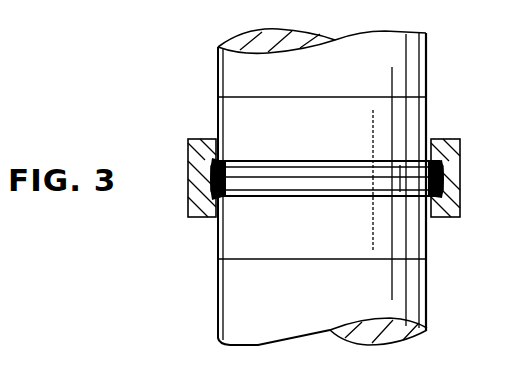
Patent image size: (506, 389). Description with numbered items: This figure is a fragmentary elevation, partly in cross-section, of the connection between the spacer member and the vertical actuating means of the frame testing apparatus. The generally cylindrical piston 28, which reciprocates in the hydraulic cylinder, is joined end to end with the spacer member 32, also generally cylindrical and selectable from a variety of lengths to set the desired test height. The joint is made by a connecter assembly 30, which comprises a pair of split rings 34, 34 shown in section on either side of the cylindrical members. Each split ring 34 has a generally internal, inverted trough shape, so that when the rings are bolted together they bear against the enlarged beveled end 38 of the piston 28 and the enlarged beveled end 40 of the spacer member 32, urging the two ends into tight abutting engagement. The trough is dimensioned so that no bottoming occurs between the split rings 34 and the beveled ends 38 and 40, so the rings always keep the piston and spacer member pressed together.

The piston 28 is at (431, 287).
The connecter assembly 30 is at (204, 236).
The spacer member 32 is at (430, 58).
The split rings 34 is at (197, 168).
The enlarged beveled end of the piston 38 is at (428, 217).
The enlarged beveled end of the spacer member 40 is at (404, 172).